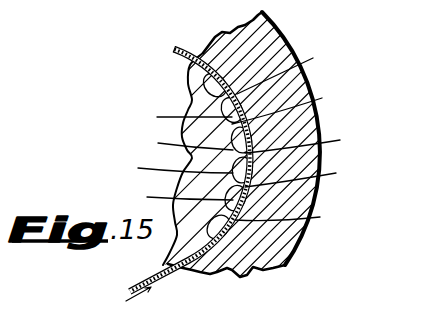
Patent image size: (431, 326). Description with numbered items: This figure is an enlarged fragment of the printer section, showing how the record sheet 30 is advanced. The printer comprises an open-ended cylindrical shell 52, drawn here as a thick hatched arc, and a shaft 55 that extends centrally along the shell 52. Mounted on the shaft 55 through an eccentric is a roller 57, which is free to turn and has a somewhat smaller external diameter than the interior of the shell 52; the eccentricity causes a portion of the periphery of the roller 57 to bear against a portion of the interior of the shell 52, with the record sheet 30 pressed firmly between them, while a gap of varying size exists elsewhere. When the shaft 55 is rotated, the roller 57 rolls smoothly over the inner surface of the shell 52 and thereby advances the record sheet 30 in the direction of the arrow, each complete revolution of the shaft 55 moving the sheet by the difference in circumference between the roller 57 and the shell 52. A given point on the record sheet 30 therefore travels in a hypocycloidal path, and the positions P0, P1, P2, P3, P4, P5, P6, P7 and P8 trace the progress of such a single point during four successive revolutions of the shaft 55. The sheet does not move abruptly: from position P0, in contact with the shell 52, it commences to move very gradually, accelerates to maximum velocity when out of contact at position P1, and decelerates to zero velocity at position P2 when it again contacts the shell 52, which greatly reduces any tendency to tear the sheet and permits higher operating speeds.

The cylindrical shell 52 is at (261, 19).
The roller 57 is at (195, 82).
The record sheet 30 is at (164, 278).
The shaft 55 is at (11, 158).
The position P8 is at (285, 71).
The position P6 is at (287, 107).
The position P4 is at (302, 143).
The position P2 is at (302, 178).
The position P0 is at (286, 216).
The position P7 is at (185, 116).
The position P5 is at (186, 144).
The position P3 is at (176, 168).
The position P1 is at (182, 198).